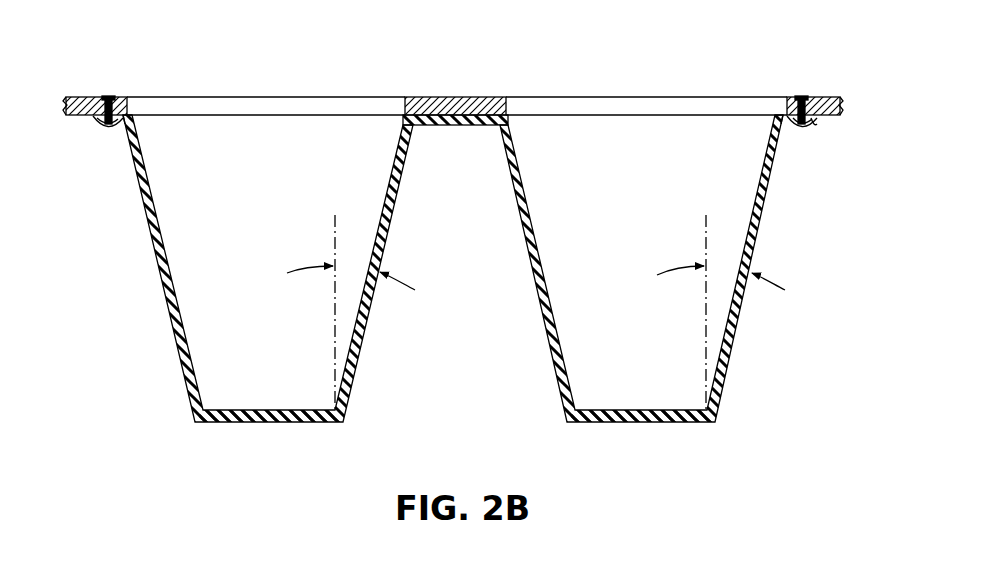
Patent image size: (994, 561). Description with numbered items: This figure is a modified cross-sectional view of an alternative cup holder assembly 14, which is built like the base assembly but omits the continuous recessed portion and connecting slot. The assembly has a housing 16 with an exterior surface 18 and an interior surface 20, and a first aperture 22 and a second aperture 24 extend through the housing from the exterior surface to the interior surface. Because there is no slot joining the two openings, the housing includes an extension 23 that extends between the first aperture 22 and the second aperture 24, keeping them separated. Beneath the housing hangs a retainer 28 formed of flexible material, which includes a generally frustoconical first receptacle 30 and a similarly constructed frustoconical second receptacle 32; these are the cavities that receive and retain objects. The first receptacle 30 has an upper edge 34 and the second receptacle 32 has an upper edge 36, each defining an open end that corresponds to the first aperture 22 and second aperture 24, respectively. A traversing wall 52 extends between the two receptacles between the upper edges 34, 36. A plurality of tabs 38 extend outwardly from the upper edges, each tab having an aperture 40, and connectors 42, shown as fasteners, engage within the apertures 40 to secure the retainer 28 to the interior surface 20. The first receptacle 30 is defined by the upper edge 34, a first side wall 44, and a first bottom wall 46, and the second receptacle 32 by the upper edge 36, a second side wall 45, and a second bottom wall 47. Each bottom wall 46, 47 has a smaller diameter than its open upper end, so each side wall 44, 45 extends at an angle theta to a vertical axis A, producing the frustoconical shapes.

The cup holder assembly 14 is at (137, 77).
The housing 16 is at (828, 97).
The exterior surface 18 is at (812, 97).
The interior surface 20 is at (822, 117).
The first aperture 22 is at (250, 97).
The extension 23 is at (443, 97).
The second aperture 24 is at (650, 97).
The retainer 28 is at (464, 350).
The first receptacle 30 is at (265, 200).
The second receptacle 32 is at (603, 198).
The upper edge 34 is at (310, 118).
The upper edge 36 is at (705, 118).
The tabs 38 is at (94, 120).
The aperture 40 is at (105, 130).
The connectors 42 is at (123, 122).
The first side wall 44 is at (162, 290).
The second side wall 45 is at (558, 372).
The first bottom wall 46 is at (222, 424).
The second bottom wall 47 is at (603, 424).
The traversing wall 52 is at (457, 127).